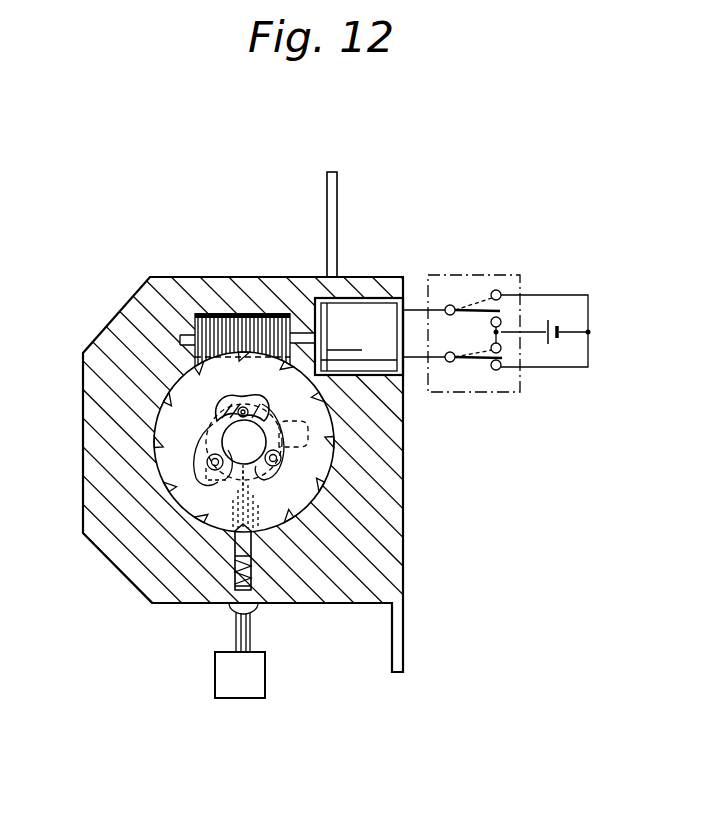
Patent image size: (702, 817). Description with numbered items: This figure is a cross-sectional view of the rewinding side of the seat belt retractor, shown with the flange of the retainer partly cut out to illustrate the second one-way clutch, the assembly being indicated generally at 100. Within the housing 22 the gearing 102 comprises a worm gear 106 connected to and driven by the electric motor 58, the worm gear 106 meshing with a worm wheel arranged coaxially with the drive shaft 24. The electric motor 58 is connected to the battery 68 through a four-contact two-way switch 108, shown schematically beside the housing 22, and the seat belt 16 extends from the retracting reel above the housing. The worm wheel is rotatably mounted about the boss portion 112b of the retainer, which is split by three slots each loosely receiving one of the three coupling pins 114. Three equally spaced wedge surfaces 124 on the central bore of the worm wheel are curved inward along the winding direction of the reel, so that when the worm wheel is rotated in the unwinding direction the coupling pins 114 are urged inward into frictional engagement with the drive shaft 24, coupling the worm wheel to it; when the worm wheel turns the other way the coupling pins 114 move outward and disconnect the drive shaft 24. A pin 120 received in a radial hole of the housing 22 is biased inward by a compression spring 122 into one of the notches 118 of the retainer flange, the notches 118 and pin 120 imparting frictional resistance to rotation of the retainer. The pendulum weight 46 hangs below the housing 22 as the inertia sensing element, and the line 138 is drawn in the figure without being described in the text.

The clutch assembly 100 is at (136, 225).
The seat belt 16 is at (338, 196).
The worm gear 106 is at (240, 313).
The gearing 102 is at (283, 298).
The electric motor 58 is at (378, 316).
The four-contact two-way switch 108 is at (495, 275).
The battery 68 is at (553, 343).
The reference circle 138 is at (221, 441).
The drive shaft 24 is at (222, 436).
The wedge surfaces 124 is at (216, 408).
The coupling pins 114 is at (247, 412).
The boss portion 112b is at (286, 450).
The housing 22 is at (140, 573).
The pin 120 is at (235, 543).
The compression spring 122 is at (253, 565).
The notches 118 is at (333, 505).
The pendulum weight 46 is at (265, 688).